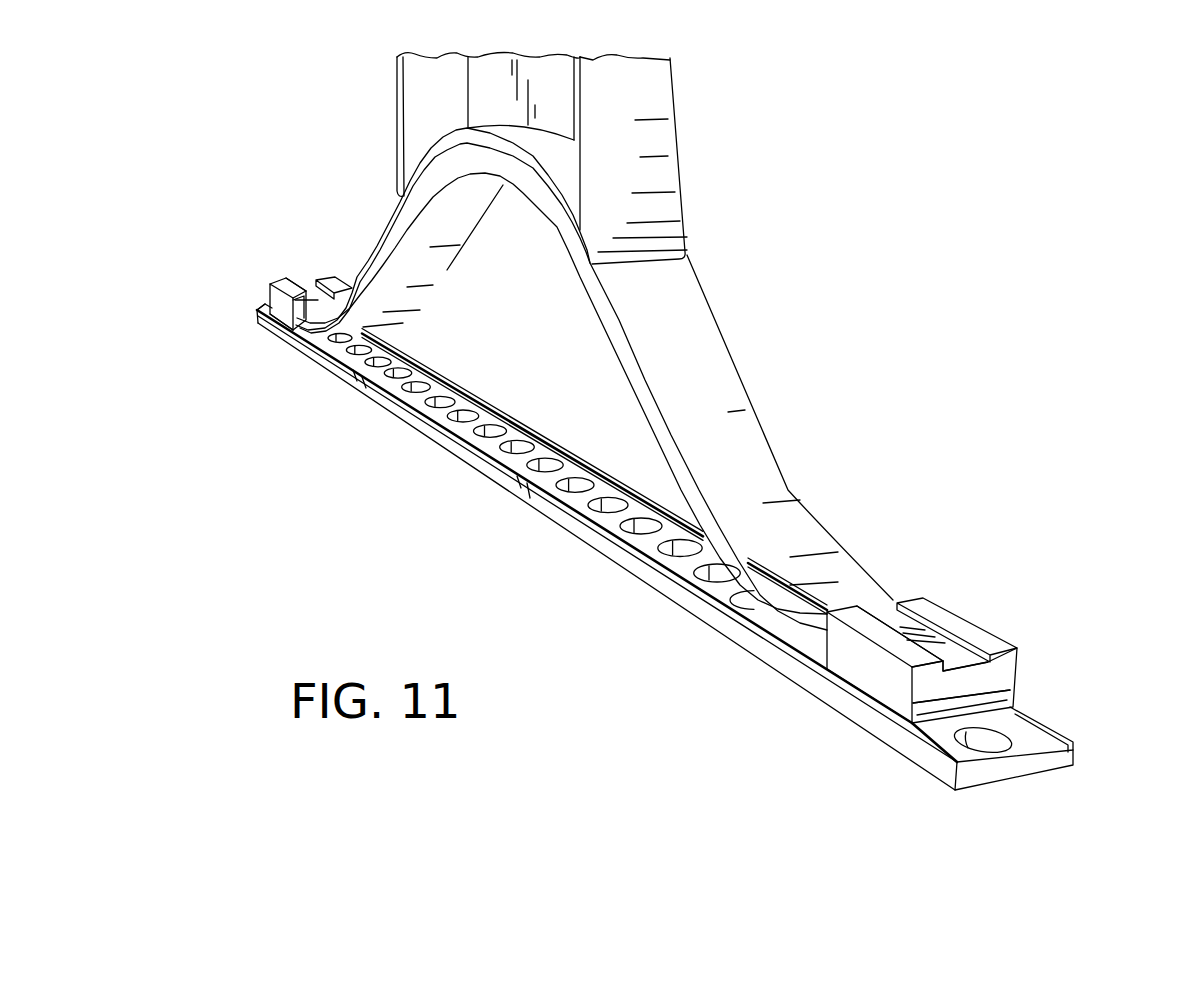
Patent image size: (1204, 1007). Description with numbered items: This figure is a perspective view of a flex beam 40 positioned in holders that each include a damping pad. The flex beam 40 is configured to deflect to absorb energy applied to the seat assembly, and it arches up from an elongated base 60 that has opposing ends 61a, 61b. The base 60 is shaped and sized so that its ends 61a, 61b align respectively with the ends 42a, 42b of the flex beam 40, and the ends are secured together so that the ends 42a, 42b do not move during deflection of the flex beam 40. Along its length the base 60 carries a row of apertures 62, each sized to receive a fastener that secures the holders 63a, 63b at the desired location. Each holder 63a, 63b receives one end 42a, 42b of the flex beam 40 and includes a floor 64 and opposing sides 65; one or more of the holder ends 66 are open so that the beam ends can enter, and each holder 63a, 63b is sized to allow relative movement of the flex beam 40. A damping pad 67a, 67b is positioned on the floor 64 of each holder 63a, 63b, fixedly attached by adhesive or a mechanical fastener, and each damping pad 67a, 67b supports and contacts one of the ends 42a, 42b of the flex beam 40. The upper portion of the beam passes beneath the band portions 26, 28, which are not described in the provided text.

The cuff band 26 is at (688, 160).
The band edge portion 28 is at (400, 118).
The flex beam 40 is at (723, 395).
The base 60 is at (573, 522).
The apertures 62 is at (405, 370).
The holder 63a is at (283, 308).
The holder 63b is at (963, 667).
The end of base 61a is at (257, 311).
The end of base 61b is at (1020, 770).
The floor 64 is at (297, 358).
The sides 65 is at (343, 278).
The ends of holder 66 is at (293, 276).
The end of flex beam 42a is at (297, 280).
The end of flex beam 42b is at (990, 640).
The damping pad 67a is at (283, 337).
The damping pad 67b is at (935, 713).